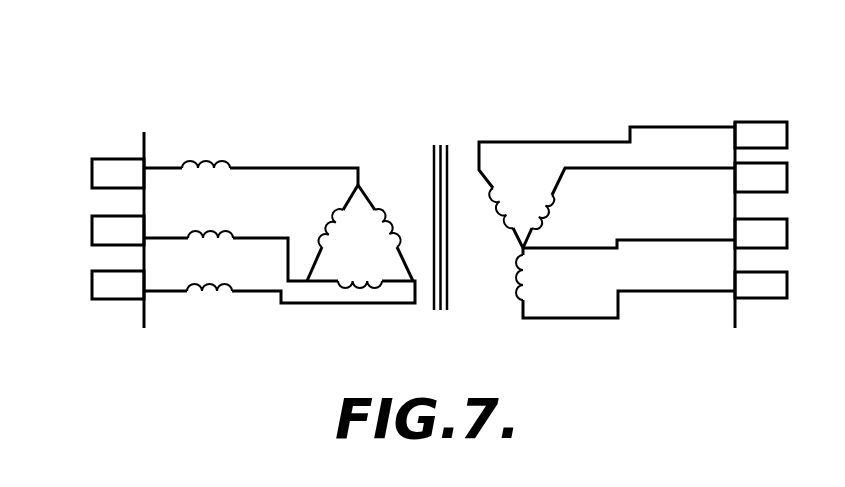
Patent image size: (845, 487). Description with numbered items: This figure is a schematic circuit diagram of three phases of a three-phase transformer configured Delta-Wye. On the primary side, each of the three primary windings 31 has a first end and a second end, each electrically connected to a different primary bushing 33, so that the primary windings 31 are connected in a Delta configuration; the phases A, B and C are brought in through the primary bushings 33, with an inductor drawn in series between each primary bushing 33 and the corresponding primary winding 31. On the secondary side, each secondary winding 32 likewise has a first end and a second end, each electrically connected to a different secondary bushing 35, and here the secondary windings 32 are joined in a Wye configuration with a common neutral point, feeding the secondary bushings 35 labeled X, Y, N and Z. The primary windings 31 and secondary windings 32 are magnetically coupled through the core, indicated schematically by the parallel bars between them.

The primary bushing 33 is at (103, 131).
The primary winding 31 is at (333, 124).
The secondary winding 32 is at (517, 107).
The secondary bushing 35 is at (749, 89).